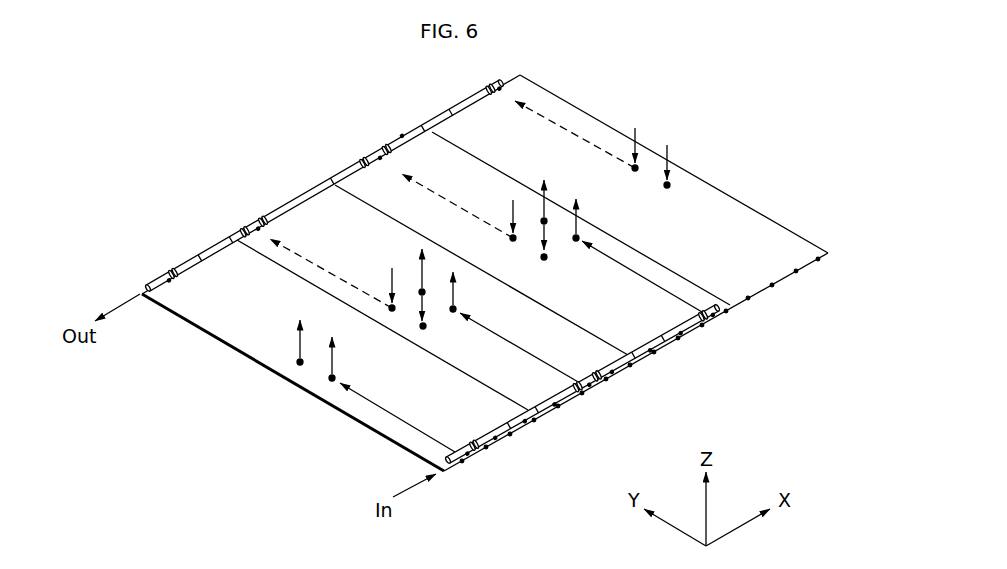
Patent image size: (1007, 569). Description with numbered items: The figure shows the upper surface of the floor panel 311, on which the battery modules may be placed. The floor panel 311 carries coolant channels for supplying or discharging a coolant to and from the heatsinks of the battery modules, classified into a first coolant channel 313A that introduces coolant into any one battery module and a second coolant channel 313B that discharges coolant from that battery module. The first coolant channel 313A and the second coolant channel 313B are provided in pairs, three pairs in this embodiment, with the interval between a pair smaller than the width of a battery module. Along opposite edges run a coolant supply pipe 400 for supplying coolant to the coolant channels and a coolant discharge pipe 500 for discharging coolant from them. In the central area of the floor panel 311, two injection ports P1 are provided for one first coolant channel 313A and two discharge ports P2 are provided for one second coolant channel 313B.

The floor panel 311 is at (737, 198).
The first coolant channel 313A is at (470, 454).
The second coolant channel 313B is at (806, 269).
The coolant supply pipe 400 is at (521, 427).
The coolant discharge pipe 500 is at (207, 247).
The injection port P1 is at (332, 378).
The discharge port P2 is at (423, 326).